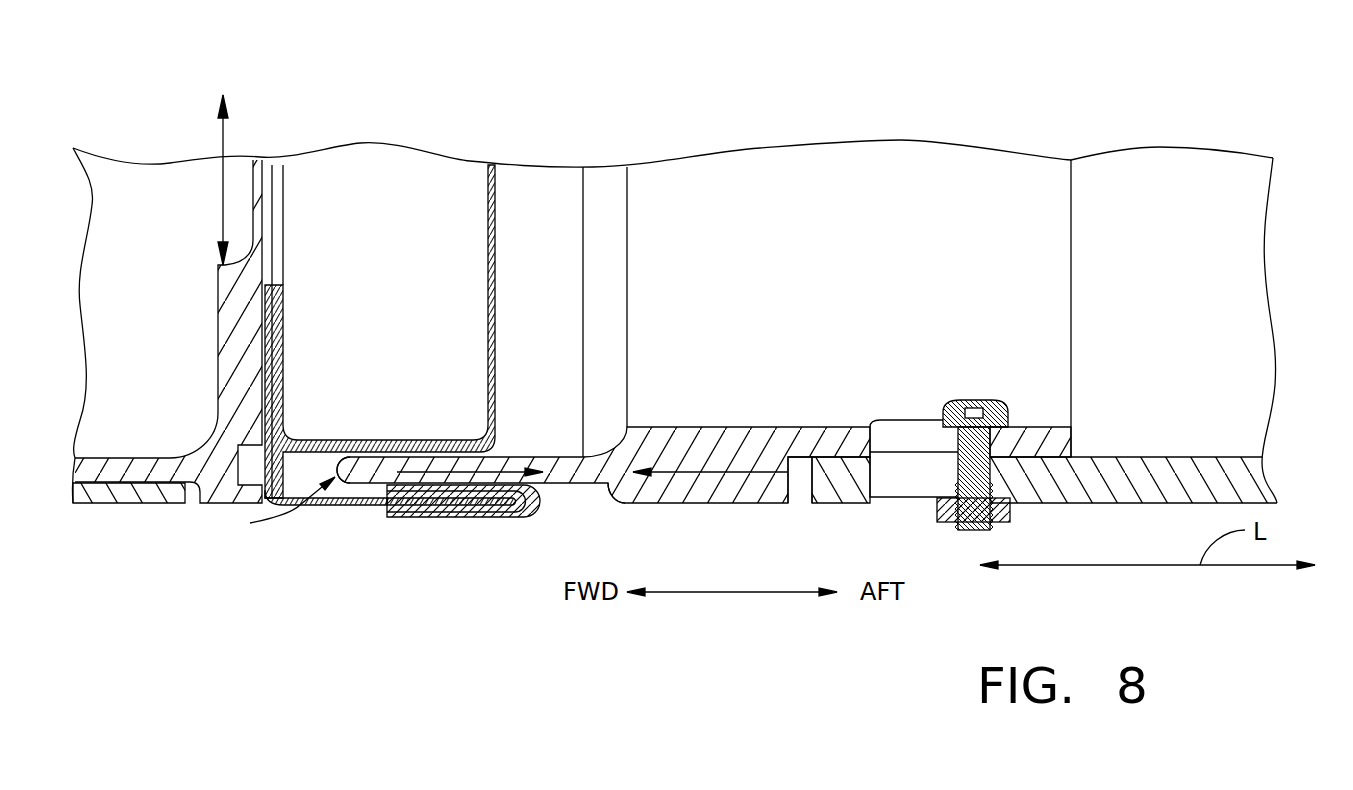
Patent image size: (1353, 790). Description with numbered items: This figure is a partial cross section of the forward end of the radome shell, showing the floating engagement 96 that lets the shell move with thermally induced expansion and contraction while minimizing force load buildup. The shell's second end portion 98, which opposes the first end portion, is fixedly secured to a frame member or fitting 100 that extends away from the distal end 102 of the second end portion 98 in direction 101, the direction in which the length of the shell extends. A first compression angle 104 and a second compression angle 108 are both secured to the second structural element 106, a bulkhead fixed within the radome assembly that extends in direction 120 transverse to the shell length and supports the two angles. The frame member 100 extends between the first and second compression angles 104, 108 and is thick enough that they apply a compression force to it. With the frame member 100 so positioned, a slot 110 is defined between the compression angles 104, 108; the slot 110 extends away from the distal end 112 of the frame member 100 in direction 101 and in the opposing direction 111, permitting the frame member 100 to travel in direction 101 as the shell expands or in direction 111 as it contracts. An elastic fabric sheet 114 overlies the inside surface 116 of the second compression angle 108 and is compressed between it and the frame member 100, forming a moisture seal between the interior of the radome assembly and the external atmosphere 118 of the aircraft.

The floating engagement 96 is at (488, 117).
The second end portion 98 is at (1238, 138).
The frame member or fitting 100 is at (840, 175).
The direction 101 is at (715, 470).
The distal end 102 is at (800, 490).
The first compression angle 104 is at (308, 437).
The second structural element 106 is at (242, 338).
The second compression angle 108 is at (320, 497).
The slot 110 is at (269, 508).
The opposing direction 111 is at (476, 470).
The distal end 112 is at (342, 470).
The elastic fabric sheet 114 is at (540, 503).
The inside surface 116 is at (370, 497).
The external atmosphere 118 is at (510, 545).
The direction 120 is at (227, 138).